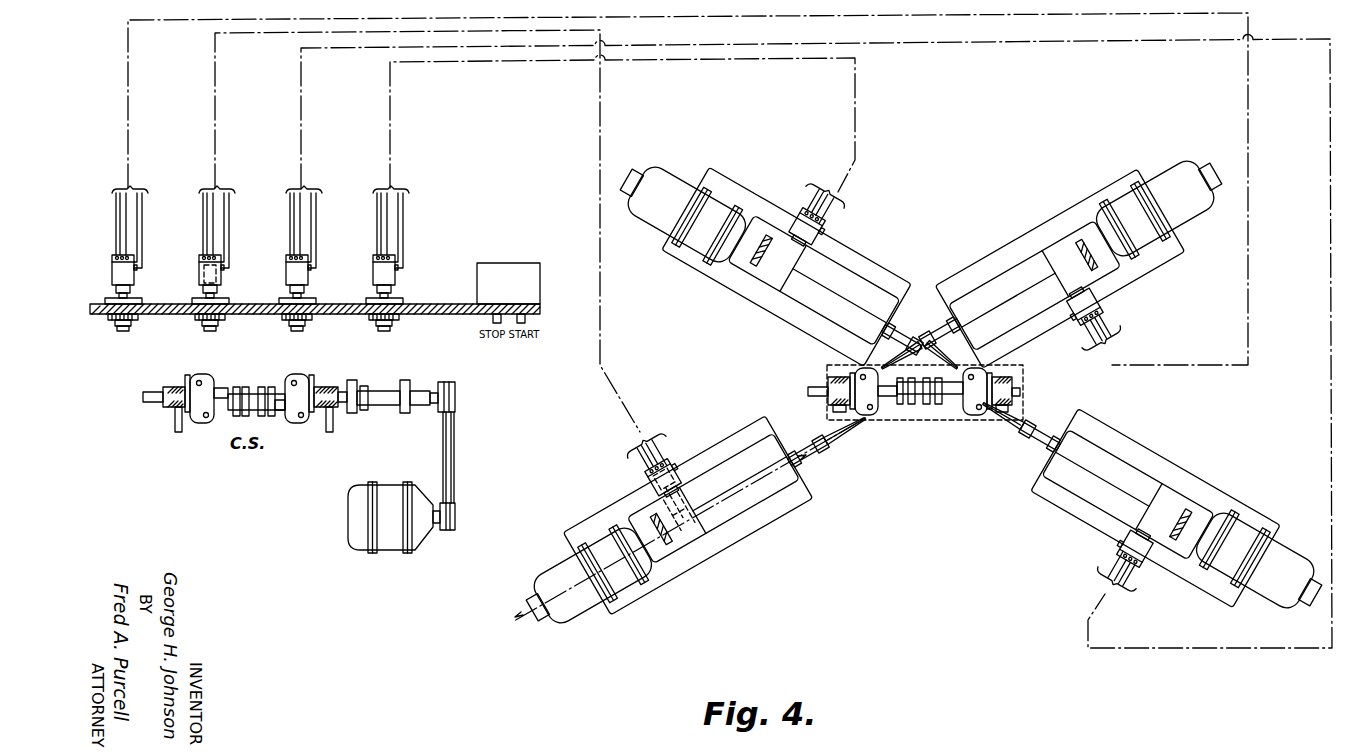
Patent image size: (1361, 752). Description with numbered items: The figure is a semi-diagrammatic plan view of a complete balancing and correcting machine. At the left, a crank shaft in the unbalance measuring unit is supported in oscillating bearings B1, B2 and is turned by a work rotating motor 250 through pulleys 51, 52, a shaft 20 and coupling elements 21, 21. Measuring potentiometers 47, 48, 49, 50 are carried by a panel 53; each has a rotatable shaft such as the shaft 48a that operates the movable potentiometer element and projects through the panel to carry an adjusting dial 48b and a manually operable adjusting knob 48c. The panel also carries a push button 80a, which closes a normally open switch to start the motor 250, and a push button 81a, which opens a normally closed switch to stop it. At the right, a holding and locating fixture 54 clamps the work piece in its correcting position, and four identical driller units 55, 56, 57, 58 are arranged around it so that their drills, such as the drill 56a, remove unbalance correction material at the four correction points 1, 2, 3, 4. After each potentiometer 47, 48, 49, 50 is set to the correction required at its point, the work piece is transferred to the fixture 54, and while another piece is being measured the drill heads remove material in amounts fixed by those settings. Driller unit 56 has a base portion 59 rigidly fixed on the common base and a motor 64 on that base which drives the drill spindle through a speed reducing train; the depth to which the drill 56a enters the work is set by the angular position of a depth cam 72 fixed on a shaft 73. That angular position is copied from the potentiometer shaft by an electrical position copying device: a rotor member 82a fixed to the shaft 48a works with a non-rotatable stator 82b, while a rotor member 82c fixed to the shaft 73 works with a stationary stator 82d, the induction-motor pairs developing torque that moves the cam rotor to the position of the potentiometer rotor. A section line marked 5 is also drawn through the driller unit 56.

The potentiometer 47 is at (140, 305).
The potentiometer 48 is at (217, 270).
The potentiometer 49 is at (315, 305).
The potentiometer 50 is at (401, 305).
The panel 53 is at (432, 314).
The push button 81a is at (492, 320).
The push button 80a is at (526, 323).
The member 82a is at (217, 273).
The non-rotatable member 82b is at (199, 264).
The rotatable shaft 48a is at (237, 320).
The adjusting dial 48b is at (200, 323).
The adjusting knob 48c is at (212, 332).
The oscillating bearing B1 is at (176, 384).
The oscillating bearing B2 is at (332, 377).
The correction point 1 is at (205, 382).
The correction point 2 is at (206, 420).
The correction point 3 is at (309, 420).
The correction point 4 is at (303, 382).
The coupling element 21 is at (352, 414).
The shaft 20 is at (436, 383).
The pulley 52 is at (458, 402).
The pulley 51 is at (458, 511).
The motor 250 is at (362, 535).
The driller unit 58 is at (774, 207).
The driller unit 55 is at (1024, 226).
The driller unit 56 is at (690, 512).
The driller unit 57 is at (1206, 485).
The base portion 59 is at (660, 588).
The motor 64 is at (585, 602).
The section line 5 is at (519, 620).
The member 82c is at (678, 472).
The stationary member 82d is at (654, 490).
The shaft 73 is at (690, 492).
The depth cam 72 is at (700, 506).
The drill 56a is at (852, 438).
The holding and locating fixture 54 is at (1028, 401).